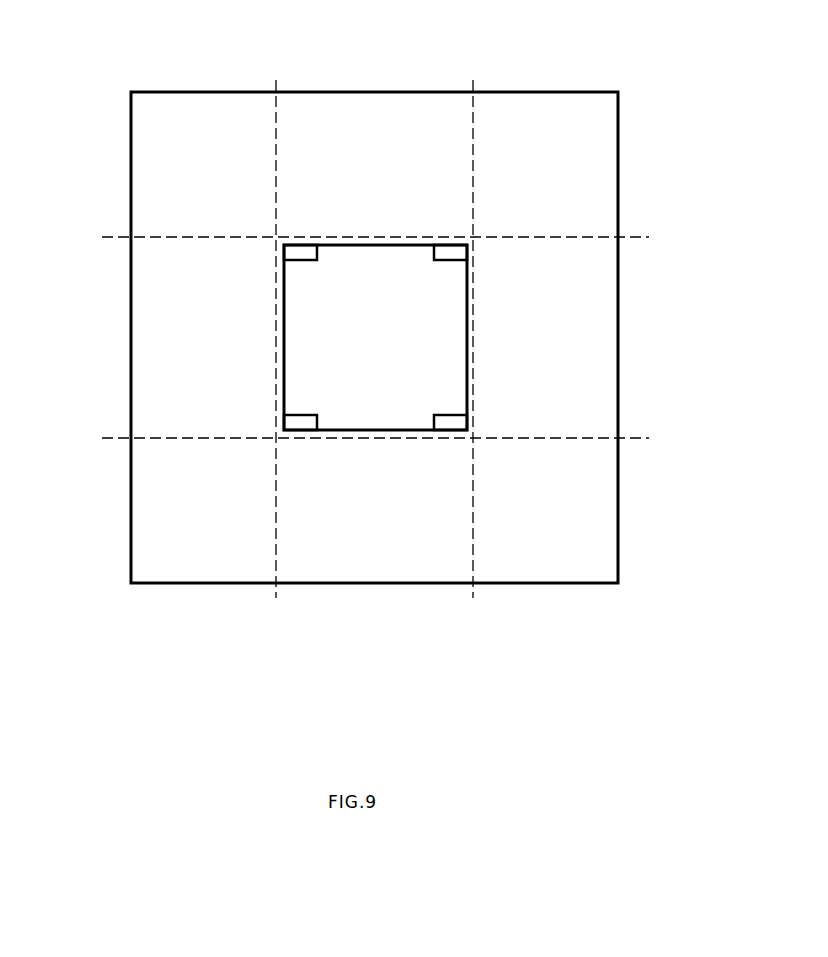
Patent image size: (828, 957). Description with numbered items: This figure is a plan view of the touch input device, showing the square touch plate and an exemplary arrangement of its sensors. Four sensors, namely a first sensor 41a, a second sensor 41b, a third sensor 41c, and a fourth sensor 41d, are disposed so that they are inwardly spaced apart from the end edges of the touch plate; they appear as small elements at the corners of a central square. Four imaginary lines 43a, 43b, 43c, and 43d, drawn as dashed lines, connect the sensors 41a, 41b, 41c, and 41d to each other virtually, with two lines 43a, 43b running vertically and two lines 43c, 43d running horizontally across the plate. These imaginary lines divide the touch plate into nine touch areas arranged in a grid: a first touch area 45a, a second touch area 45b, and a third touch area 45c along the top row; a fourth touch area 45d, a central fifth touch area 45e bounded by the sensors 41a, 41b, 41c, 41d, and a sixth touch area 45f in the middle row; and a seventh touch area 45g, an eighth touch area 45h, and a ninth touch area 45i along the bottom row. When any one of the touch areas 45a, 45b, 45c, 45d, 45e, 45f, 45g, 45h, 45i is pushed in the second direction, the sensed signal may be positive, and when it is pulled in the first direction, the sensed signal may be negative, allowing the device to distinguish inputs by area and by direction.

The first sensor 41a is at (293, 255).
The second sensor 41b is at (457, 254).
The third sensor 41c is at (293, 425).
The fourth sensor 41d is at (457, 425).
The imaginary line 43a is at (275, 540).
The imaginary line 43b is at (473, 540).
The imaginary line 43c is at (590, 237).
The imaginary line 43d is at (588, 440).
The first touch area 45a is at (208, 110).
The second touch area 45b is at (382, 110).
The third touch area 45c is at (560, 110).
The fourth touch area 45d is at (149, 328).
The fifth touch area 45e is at (362, 402).
The sixth touch area 45f is at (602, 328).
The seventh touch area 45g is at (190, 564).
The eighth touch area 45h is at (440, 564).
The ninth touch area 45i is at (582, 564).